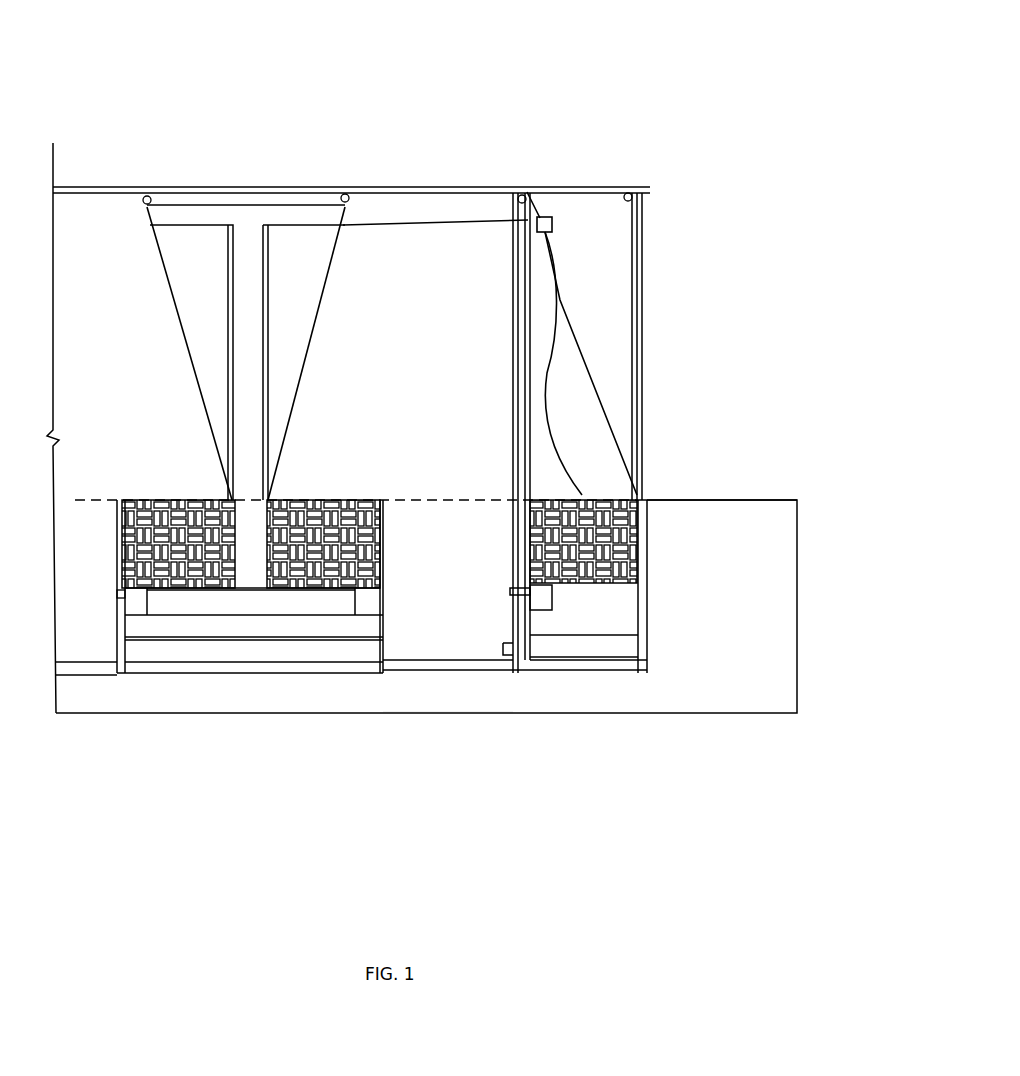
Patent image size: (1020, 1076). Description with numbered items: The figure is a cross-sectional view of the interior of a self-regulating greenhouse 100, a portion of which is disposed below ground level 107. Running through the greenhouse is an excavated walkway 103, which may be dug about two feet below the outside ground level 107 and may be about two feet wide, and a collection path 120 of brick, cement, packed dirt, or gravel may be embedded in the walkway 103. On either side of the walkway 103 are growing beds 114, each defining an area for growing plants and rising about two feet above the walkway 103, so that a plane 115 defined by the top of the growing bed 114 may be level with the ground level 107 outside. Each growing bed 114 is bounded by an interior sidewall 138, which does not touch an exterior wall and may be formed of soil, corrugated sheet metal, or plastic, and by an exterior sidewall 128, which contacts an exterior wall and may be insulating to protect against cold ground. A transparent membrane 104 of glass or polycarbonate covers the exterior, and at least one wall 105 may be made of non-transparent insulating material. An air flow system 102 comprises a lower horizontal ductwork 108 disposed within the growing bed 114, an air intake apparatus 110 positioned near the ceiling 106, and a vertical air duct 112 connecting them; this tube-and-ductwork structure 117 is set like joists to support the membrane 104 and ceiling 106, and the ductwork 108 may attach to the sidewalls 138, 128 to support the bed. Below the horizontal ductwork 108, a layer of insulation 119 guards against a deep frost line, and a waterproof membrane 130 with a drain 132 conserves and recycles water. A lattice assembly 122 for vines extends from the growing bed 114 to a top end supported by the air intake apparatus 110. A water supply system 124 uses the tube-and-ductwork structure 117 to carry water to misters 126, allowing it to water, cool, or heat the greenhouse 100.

The greenhouse 100 is at (645, 68).
The air flow system 102 is at (292, 340).
The excavated walkway 103 is at (448, 669).
The transparent membrane 104 is at (461, 172).
The wall 105 is at (645, 233).
The ceiling 106 is at (292, 190).
The ground level 107 is at (690, 497).
The lower horizontal ductwork 108 is at (370, 598).
The air intake apparatus 110 is at (343, 228).
The vertical air duct 112 is at (233, 362).
The growing bed 114 is at (570, 497).
The plane 115 is at (140, 497).
The tube-and-ductwork structure 117 is at (147, 198).
The layer of insulation 119 is at (307, 665).
The collection path 120 is at (480, 665).
The lattice assembly 122 is at (318, 318).
The water supply system 124 is at (547, 373).
The misters 126 is at (550, 215).
The exterior sidewall 128 is at (647, 543).
The waterproof membrane 130 is at (175, 637).
The drain 132 is at (122, 638).
The interior sidewall 138 is at (113, 522).